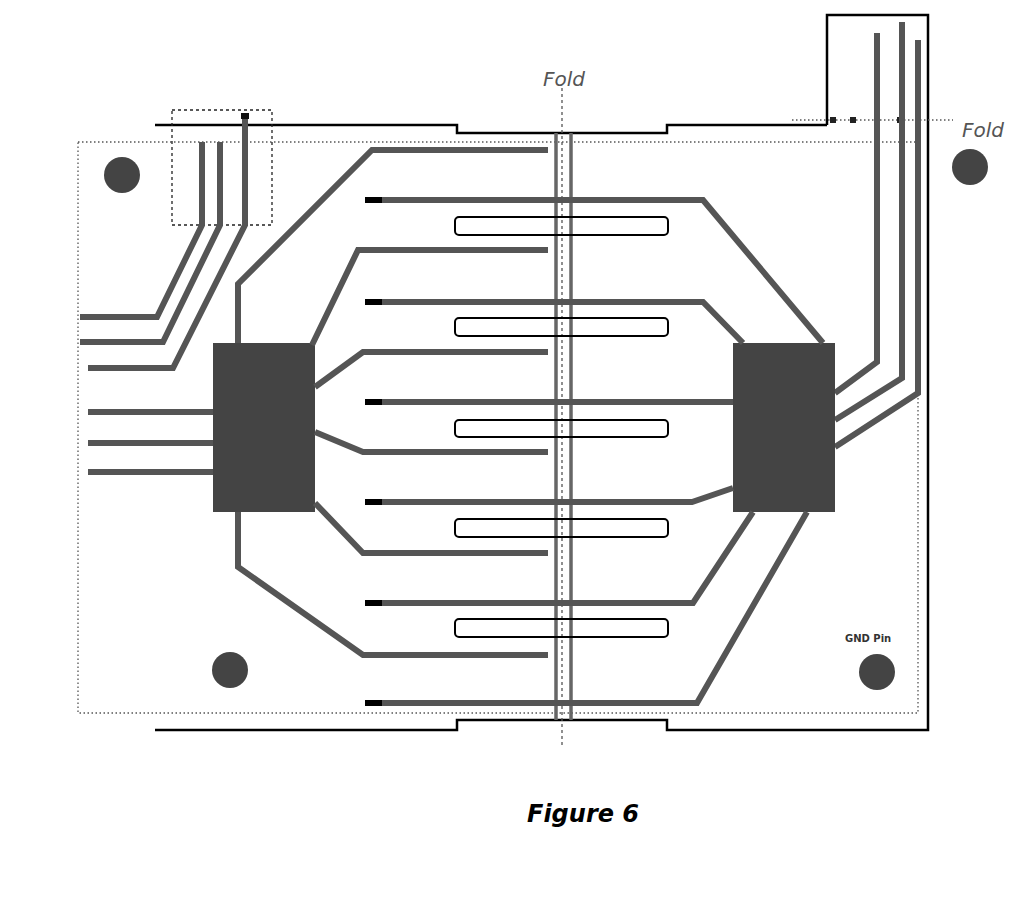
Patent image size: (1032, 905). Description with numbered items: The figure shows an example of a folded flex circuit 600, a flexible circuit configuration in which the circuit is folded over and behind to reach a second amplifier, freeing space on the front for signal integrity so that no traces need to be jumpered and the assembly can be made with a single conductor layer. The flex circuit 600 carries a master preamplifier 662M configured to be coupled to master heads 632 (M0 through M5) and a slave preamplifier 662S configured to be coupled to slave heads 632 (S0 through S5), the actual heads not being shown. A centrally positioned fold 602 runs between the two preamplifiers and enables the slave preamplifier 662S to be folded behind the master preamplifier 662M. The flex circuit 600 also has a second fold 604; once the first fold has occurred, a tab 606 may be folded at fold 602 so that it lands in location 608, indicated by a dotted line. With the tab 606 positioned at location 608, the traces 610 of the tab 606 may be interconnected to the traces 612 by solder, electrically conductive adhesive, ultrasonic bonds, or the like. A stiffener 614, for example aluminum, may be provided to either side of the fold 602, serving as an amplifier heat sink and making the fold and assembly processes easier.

The folded flex circuit 600 is at (640, 92).
The fold 602 is at (560, 115).
The second fold 604 is at (938, 120).
The tab 606 is at (827, 48).
The location 608 is at (275, 170).
The traces of the tab 610 is at (882, 72).
The traces 612 is at (237, 117).
The stiffener 614 is at (750, 142).
The heads 632 is at (530, 428).
The master preamplifier 662M is at (212, 492).
The slave preamplifier 662S is at (835, 482).